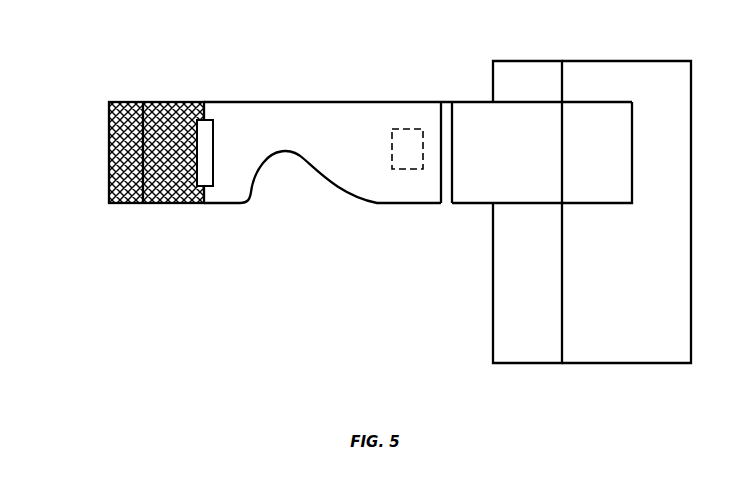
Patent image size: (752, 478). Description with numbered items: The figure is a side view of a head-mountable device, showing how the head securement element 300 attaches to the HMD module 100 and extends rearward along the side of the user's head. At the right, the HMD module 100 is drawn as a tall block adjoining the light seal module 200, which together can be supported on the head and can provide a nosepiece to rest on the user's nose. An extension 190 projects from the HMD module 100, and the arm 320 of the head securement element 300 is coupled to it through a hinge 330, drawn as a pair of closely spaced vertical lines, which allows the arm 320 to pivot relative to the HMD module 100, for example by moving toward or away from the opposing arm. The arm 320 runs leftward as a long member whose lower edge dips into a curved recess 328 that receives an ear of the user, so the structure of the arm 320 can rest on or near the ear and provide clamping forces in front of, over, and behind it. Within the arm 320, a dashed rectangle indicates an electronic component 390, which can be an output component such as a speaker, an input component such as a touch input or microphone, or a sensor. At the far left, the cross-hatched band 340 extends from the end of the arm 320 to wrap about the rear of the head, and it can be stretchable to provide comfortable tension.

The HMD module 100 is at (638, 79).
The extension 190 is at (587, 192).
The light seal module 200 is at (538, 79).
The head securement element 300 is at (232, 100).
The arm 320 is at (337, 117).
The recess 328 is at (252, 195).
The hinge 330 is at (446, 103).
The band 340 is at (109, 150).
The electronic component 390 is at (400, 170).